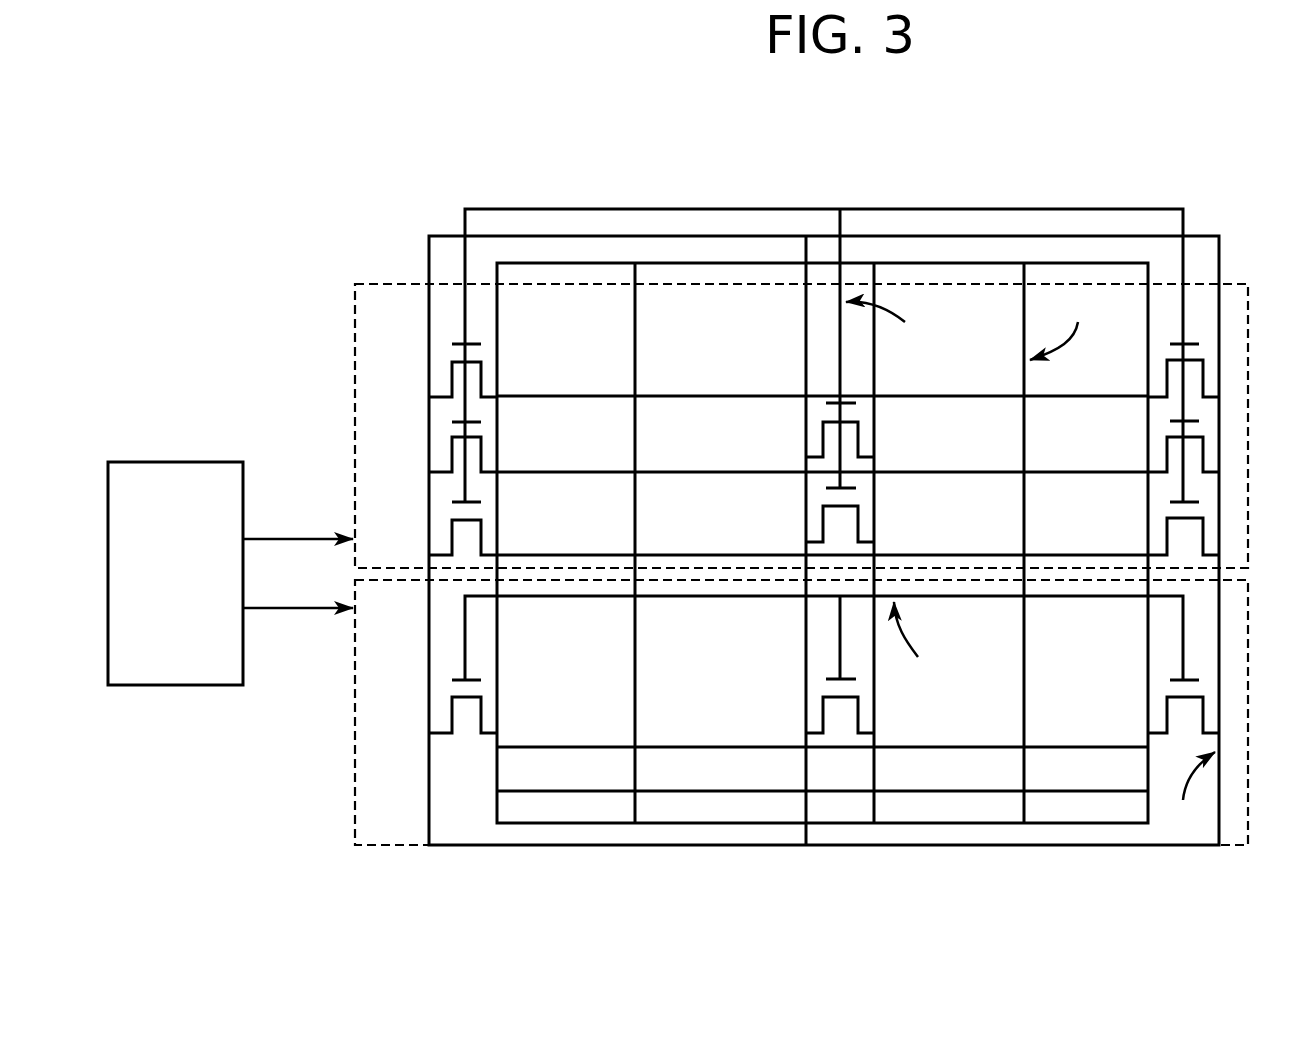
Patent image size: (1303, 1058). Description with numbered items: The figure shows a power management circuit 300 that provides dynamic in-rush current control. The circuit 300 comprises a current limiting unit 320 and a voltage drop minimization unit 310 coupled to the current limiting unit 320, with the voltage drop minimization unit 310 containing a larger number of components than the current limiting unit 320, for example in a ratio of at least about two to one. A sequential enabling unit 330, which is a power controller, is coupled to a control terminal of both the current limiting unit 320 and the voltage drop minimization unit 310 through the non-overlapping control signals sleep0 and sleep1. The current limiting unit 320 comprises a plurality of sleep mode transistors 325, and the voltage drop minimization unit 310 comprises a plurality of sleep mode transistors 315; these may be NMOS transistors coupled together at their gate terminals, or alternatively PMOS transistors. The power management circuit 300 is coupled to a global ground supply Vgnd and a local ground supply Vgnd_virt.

The power management circuit 300 is at (1162, 146).
The voltage drop minimization unit 310 is at (355, 367).
The sleep mode transistors 315 is at (452, 362).
The current limiting unit 320 is at (355, 708).
The sleep mode transistors 325 is at (473, 688).
The sequential enabling unit 330 is at (178, 462).